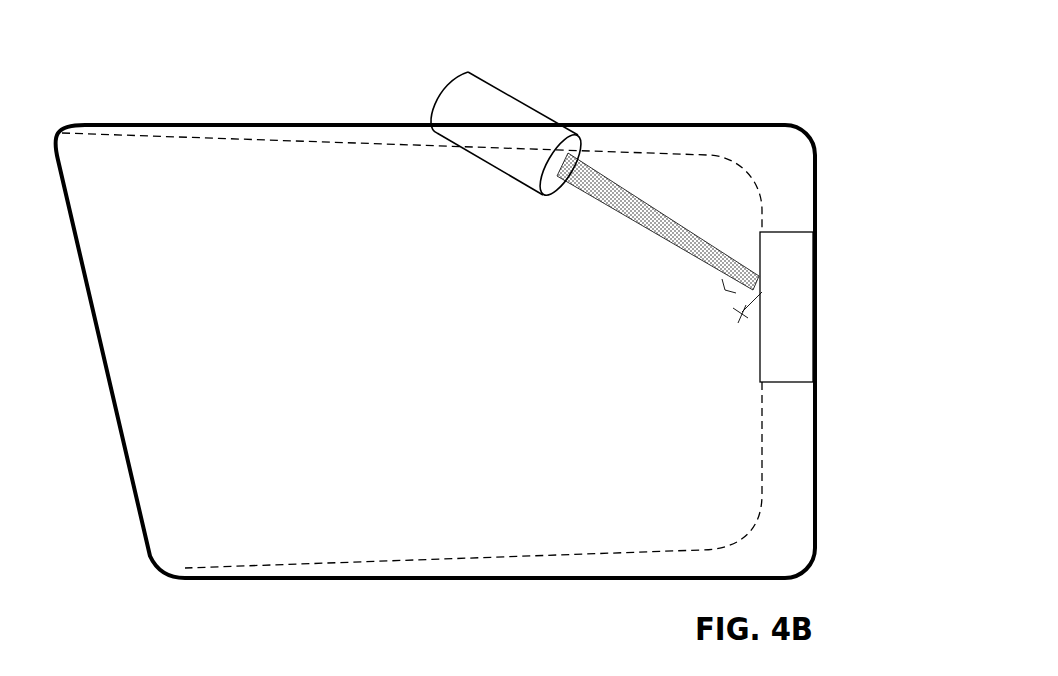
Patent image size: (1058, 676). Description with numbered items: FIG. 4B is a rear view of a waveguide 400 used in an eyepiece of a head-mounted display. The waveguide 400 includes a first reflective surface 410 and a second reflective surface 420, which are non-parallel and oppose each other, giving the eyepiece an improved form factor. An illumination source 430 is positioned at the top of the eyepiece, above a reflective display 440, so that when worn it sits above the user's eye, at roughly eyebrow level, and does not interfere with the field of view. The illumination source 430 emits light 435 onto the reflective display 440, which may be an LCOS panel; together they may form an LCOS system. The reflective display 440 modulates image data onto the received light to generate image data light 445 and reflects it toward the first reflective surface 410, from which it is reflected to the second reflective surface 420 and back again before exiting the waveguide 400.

The waveguide 400 is at (435, 382).
The first reflective surface 410 is at (557, 578).
The second reflective surface 420 is at (488, 560).
The illumination source 430 is at (530, 127).
The light 435 is at (652, 235).
The reflective display 440 is at (817, 250).
The image data light 445 is at (741, 322).